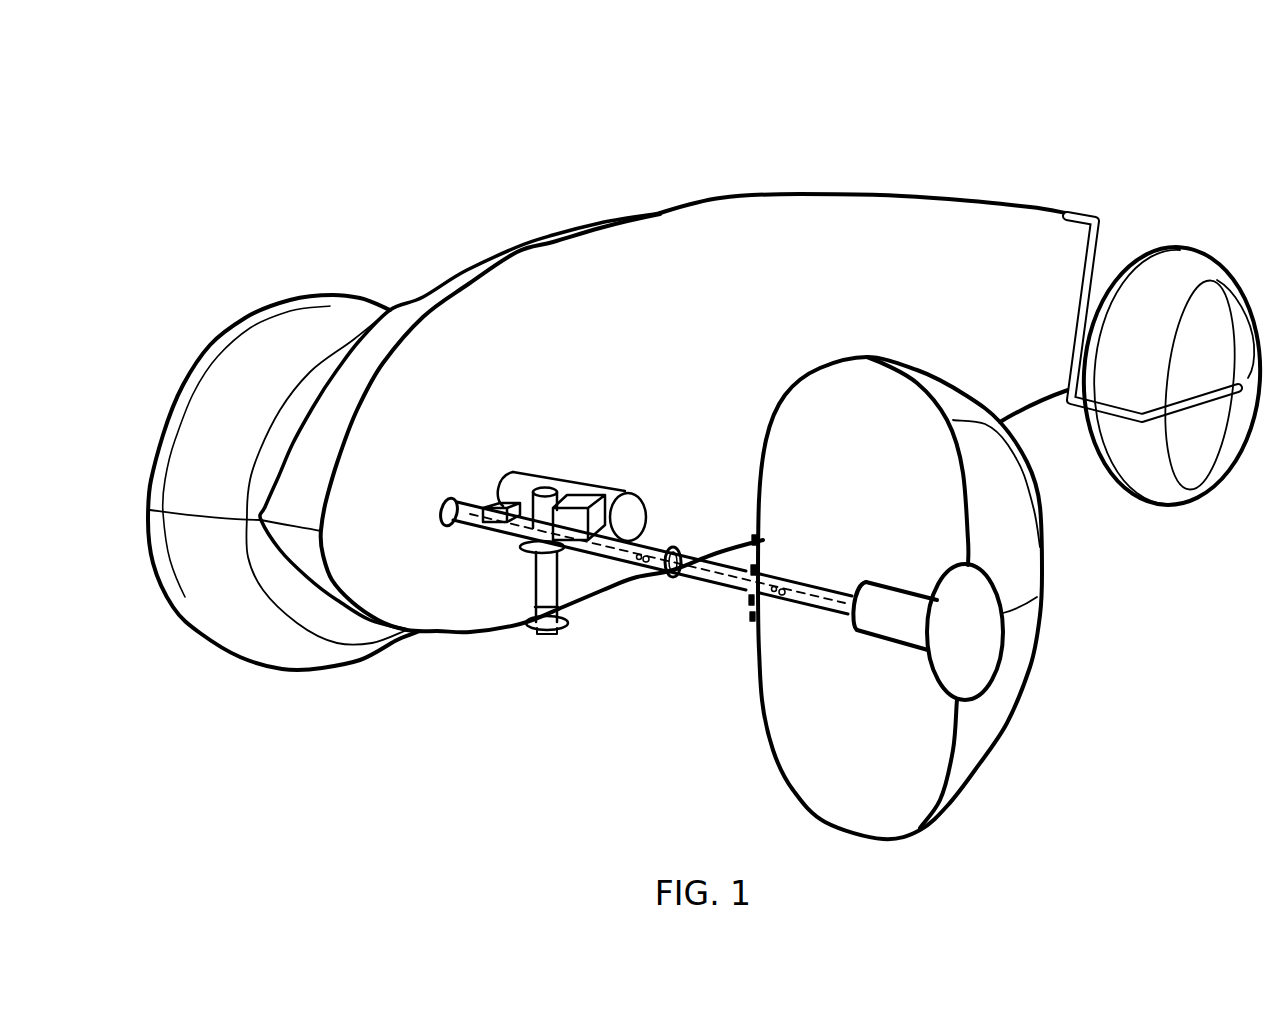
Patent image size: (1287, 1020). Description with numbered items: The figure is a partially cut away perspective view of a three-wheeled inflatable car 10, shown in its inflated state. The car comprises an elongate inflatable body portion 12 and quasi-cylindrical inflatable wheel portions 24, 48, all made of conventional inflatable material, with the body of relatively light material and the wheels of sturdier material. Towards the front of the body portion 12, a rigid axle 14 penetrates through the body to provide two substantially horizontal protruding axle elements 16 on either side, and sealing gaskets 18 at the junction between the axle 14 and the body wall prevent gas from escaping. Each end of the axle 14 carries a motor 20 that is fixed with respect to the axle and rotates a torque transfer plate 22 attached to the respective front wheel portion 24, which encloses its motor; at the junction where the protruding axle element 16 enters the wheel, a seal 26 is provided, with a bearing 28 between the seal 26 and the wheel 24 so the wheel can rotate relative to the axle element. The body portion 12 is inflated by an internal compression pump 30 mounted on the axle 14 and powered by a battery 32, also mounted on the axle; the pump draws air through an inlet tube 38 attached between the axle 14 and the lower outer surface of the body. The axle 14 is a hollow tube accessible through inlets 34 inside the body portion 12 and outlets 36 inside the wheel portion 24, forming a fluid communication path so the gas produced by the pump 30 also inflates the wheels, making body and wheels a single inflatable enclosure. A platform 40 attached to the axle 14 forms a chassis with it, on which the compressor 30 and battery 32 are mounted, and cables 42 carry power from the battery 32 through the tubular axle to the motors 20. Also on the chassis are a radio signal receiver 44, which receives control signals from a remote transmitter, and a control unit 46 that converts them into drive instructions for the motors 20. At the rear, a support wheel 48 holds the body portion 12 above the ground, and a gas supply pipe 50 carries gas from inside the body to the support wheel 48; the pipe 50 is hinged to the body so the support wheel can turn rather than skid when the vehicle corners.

The inflatable car 10 is at (620, 146).
The body portion 12 is at (550, 313).
The axle 14 is at (550, 610).
The protruding axle elements 16 is at (690, 567).
The sealing gaskets 18 is at (677, 573).
The motor 20 is at (887, 623).
The torque transfer plate 22 is at (977, 650).
The wheel portion 24 is at (290, 298).
The seal 26 is at (748, 600).
The bearing 28 is at (752, 613).
The compression pump 30 is at (488, 517).
The battery 32 is at (505, 482).
The inlets 34 is at (645, 557).
The outlets 36 is at (763, 583).
The inlet tube 38 is at (530, 580).
The platform 40 is at (528, 528).
The cables 42 is at (673, 577).
The radio signal receiver 44 is at (503, 504).
The control unit 46 is at (575, 514).
The support wheel 48 is at (1180, 272).
The gas supply pipe 50 is at (1097, 232).